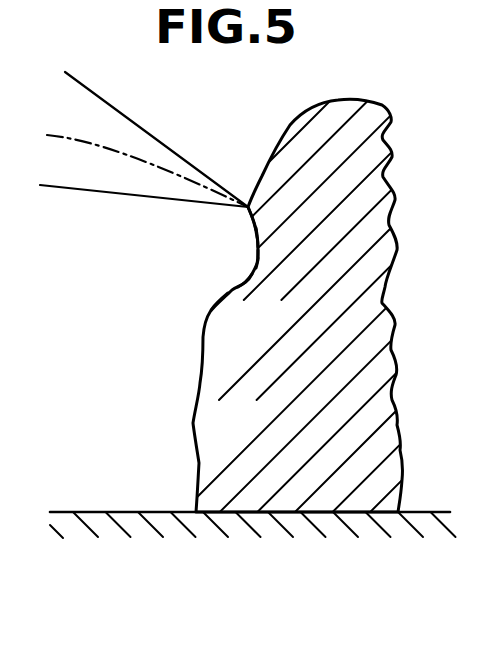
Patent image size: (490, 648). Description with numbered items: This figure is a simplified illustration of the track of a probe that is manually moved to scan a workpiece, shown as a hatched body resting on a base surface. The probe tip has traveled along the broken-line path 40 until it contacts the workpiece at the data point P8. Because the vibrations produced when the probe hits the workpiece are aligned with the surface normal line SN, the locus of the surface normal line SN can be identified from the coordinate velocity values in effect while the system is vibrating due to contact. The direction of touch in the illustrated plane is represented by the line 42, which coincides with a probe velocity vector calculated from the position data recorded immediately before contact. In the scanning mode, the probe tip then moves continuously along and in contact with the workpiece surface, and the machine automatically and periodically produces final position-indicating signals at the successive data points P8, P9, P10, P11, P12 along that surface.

The line 42 is at (140, 127).
The path 40 is at (97, 143).
The surface normal line SN is at (88, 190).
The data point P8 is at (247, 207).
The data point P9 is at (256, 228).
The data point P10 is at (258, 256).
The data point P11 is at (243, 283).
The data point P12 is at (220, 297).